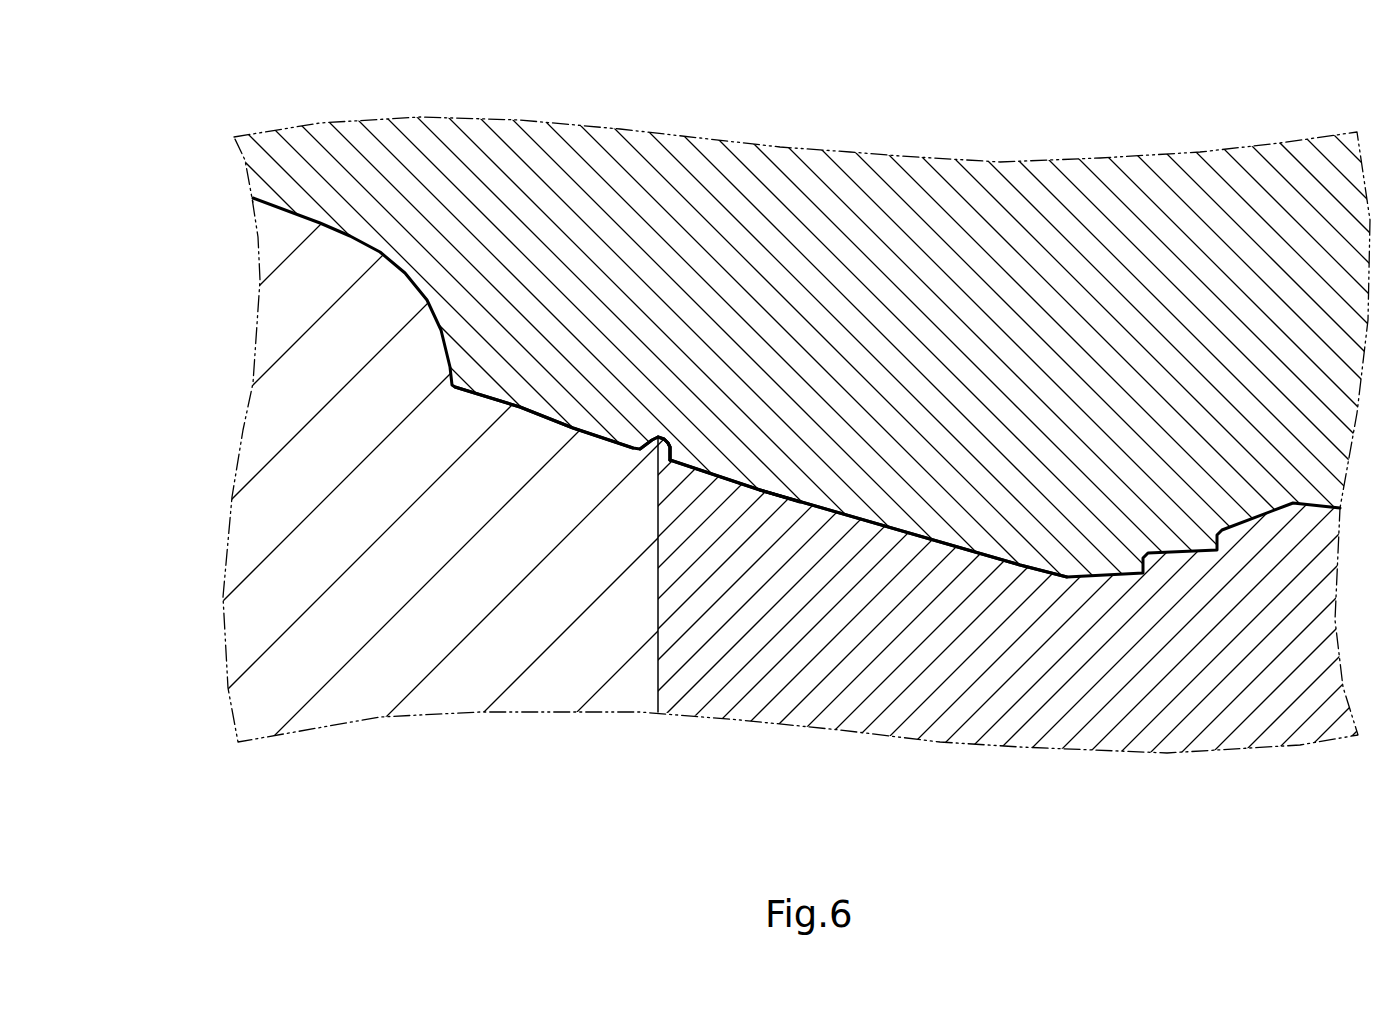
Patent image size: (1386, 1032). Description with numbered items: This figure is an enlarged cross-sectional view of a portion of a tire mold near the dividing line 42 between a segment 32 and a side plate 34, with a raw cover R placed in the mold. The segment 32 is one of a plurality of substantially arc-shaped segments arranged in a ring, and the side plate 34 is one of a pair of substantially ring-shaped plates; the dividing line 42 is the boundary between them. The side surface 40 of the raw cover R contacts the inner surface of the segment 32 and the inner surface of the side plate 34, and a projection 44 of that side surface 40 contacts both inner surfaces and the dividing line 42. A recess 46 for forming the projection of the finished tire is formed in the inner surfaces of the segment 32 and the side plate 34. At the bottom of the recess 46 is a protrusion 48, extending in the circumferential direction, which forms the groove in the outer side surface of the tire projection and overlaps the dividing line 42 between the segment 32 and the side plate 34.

The segment 32 is at (277, 562).
The side plate 34 is at (1030, 703).
The raw cover R is at (810, 203).
The side surface 40 is at (852, 522).
The dividing line 42 is at (657, 437).
The projection 44 is at (792, 468).
The recess 46 is at (522, 407).
The protrusion 48 is at (670, 443).